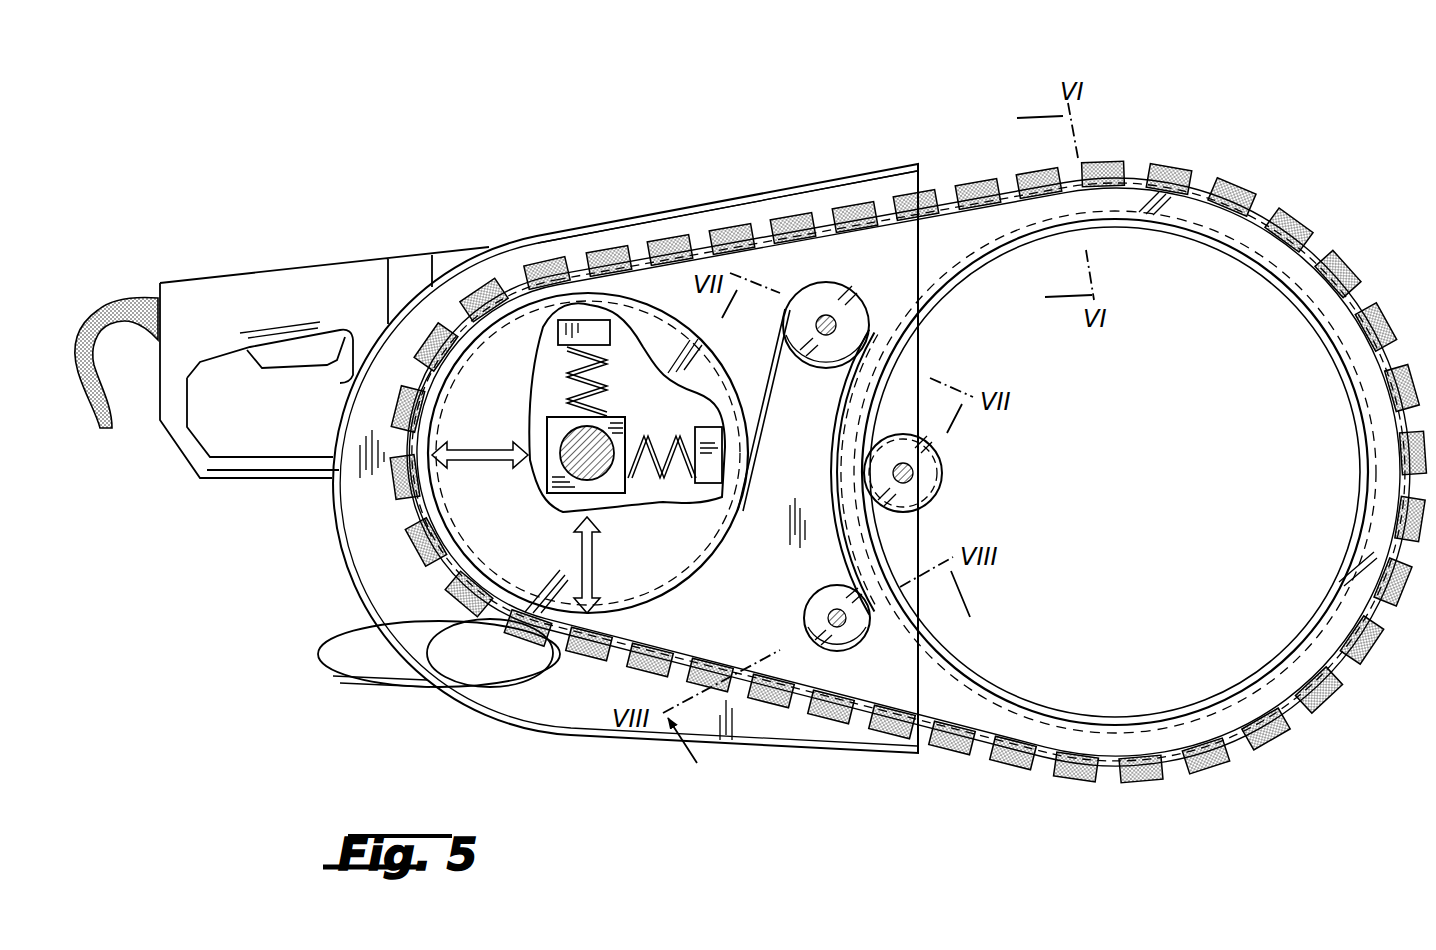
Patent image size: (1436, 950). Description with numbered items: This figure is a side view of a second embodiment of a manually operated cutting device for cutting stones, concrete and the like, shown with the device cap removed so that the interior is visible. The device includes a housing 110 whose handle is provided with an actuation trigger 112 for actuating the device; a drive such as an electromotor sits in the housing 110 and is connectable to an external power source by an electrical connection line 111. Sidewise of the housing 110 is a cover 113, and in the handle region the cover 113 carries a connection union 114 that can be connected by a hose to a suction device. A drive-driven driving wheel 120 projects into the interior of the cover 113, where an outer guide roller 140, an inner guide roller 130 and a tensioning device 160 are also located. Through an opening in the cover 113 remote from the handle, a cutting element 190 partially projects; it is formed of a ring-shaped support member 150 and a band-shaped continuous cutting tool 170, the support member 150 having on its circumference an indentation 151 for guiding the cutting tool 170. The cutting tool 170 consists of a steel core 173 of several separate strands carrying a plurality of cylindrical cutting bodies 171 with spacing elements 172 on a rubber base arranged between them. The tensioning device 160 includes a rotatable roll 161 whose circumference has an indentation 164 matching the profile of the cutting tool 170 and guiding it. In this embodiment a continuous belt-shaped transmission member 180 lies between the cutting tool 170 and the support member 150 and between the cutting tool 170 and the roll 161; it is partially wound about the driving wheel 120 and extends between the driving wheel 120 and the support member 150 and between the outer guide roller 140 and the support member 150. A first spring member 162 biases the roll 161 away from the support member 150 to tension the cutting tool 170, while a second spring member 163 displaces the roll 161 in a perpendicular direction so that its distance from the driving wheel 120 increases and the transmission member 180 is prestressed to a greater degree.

The housing 110 is at (370, 240).
The electrical connection line 111 is at (114, 428).
The actuation trigger 112 is at (270, 353).
The cover 113 is at (572, 240).
The connection union 114 is at (373, 667).
The driving wheel 120 is at (805, 326).
The inner guide roller 130 is at (940, 478).
The outer guide roller 140 is at (805, 618).
The support member 150 is at (1213, 717).
The indentation 151 is at (1253, 713).
The tensioning device 160 is at (530, 434).
The roll 161 is at (536, 555).
The first spring member 162 is at (688, 500).
The second spring member 163 is at (608, 358).
The indentation 164 is at (443, 505).
The cutting tool 170 is at (908, 444).
The cutting bodies 171 is at (1303, 230).
The spacing elements 172 is at (1263, 207).
The steel core 173 is at (1207, 180).
The transmission member 180 is at (858, 297).
The cutting element 190 is at (885, 411).